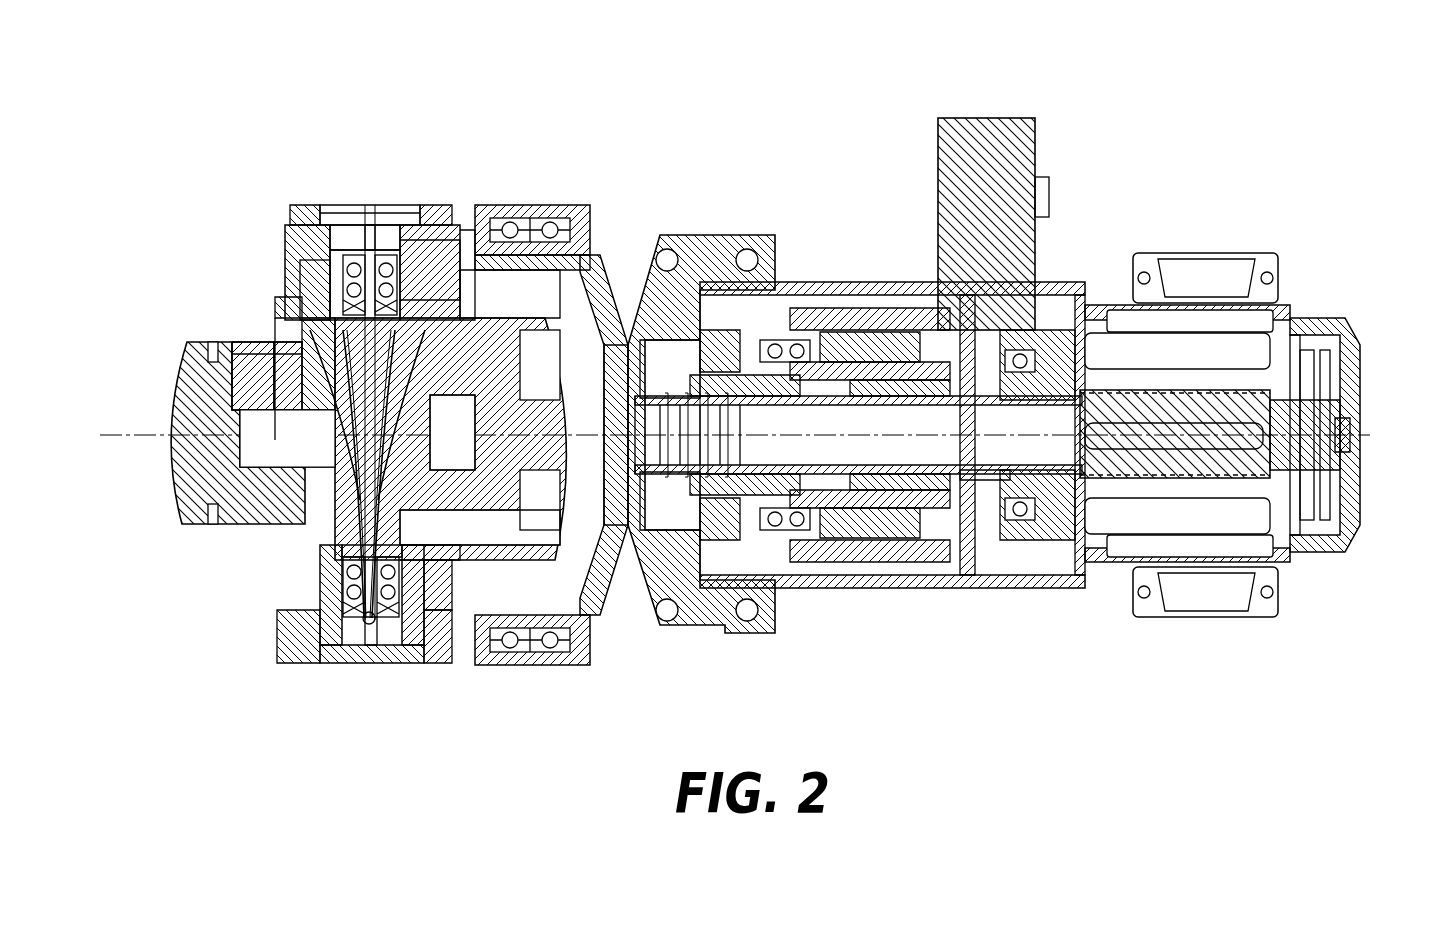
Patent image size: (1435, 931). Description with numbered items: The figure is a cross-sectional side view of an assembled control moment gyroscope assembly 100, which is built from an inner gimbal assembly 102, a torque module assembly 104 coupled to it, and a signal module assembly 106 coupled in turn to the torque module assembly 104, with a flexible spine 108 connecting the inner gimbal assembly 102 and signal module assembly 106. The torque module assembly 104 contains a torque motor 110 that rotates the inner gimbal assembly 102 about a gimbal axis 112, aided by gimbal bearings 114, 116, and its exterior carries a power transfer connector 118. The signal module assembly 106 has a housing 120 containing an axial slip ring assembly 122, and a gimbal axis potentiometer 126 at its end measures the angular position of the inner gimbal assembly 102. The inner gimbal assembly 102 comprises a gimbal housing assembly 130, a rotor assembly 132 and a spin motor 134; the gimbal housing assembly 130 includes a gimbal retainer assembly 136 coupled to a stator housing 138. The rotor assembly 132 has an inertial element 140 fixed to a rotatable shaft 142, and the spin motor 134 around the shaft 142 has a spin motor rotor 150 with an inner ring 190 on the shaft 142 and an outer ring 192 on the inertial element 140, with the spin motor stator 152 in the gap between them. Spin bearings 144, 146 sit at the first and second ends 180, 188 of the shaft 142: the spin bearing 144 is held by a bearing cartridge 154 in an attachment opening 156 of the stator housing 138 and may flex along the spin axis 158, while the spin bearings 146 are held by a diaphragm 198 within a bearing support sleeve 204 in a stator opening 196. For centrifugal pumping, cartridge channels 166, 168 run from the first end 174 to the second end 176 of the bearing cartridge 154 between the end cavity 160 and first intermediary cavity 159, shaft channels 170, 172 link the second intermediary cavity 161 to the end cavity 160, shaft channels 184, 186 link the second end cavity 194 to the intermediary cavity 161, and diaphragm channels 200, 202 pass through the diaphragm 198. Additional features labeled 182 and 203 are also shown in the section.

The control moment gyroscope assembly 100 is at (722, 118).
The inner gimbal assembly 102 is at (433, 194).
The torque module assembly 104 is at (780, 608).
The signal module assembly 106 is at (1222, 232).
The flexible spine 108 is at (962, 470).
The torque motor 110 is at (845, 316).
The gimbal axis 112 is at (836, 428).
The gimbal bearing 114 is at (512, 204).
The gimbal bearing 116 is at (512, 658).
The power transfer connector 118 is at (985, 118).
The housing 120 is at (1090, 560).
The axial slip ring assembly 122 is at (1198, 560).
The gimbal axis potentiometer 126 is at (1347, 375).
The gimbal housing assembly 130 is at (560, 300).
The rotor assembly 132 is at (160, 338).
The spin motor 134 is at (243, 310).
The gimbal retainer assembly 136 is at (560, 298).
The stator housing 138 is at (558, 218).
The inertial element 140 is at (187, 478).
The shaft 142 is at (340, 512).
The spin bearing 144 is at (376, 268).
The spin bearings 146 is at (340, 600).
The spin motor rotor 150 is at (268, 385).
The spin motor stator 152 is at (270, 356).
The bearing cartridge 154 is at (318, 272).
The attachment opening 156 is at (310, 250).
The spin axis 158 is at (358, 418).
The first intermediary cavity 159 is at (318, 268).
The end cavity 160 is at (342, 208).
The second intermediary cavity 161 is at (262, 448).
The cartridge channel 166 is at (333, 255).
The cartridge channel 168 is at (407, 262).
The shaft channel 170 is at (342, 336).
The shaft channel 172 is at (383, 383).
The first end of bearing cartridge 174 is at (400, 300).
The second end of bearing cartridge 176 is at (325, 242).
The first end of shaft 180 is at (353, 298).
The pocket 182 is at (395, 487).
The shaft channel 184 is at (340, 488).
The shaft channel 186 is at (397, 523).
The second end of shaft 188 is at (366, 626).
The inner ring 190 is at (418, 420).
The outer ring 192 is at (252, 405).
The second end cavity 194 is at (350, 642).
The stator opening 196 is at (452, 662).
The diaphragm 198 is at (345, 582).
The diaphragm channel 200 is at (340, 560).
The diaphragm channel 202 is at (394, 622).
The bottom cover 203 is at (336, 627).
The bearing support sleeve 204 is at (415, 558).